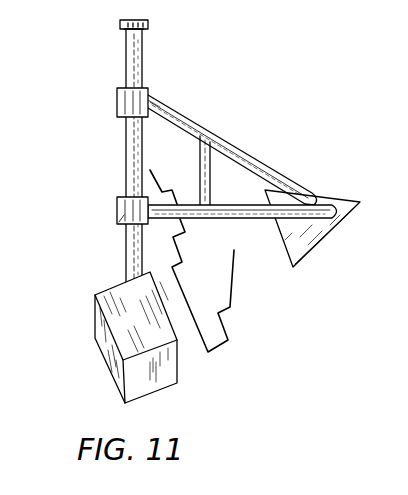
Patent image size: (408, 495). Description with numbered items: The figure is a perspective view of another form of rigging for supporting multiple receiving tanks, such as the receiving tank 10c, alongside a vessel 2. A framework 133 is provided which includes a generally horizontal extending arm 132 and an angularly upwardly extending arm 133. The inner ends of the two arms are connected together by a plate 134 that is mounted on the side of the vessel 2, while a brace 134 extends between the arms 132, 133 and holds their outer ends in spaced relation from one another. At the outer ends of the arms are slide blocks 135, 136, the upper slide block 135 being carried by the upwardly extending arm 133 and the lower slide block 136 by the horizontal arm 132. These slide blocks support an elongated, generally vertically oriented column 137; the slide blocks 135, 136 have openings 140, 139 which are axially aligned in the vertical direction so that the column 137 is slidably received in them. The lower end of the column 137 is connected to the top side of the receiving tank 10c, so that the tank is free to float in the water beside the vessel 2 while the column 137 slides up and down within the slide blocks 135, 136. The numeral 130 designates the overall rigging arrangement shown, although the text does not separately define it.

The vessel 2 is at (236, 305).
The receiving tank 10c is at (104, 342).
The mounting bracket assembly 130 is at (179, 103).
The horizontal extending arm 132 is at (243, 212).
The angularly upwardly extending arm 133 is at (191, 126).
The brace 134 is at (204, 174).
The slide block 135 is at (117, 107).
The slide block 136 is at (117, 204).
The column 137 is at (127, 143).
The opening 139 is at (120, 224).
The opening 140 is at (128, 82).